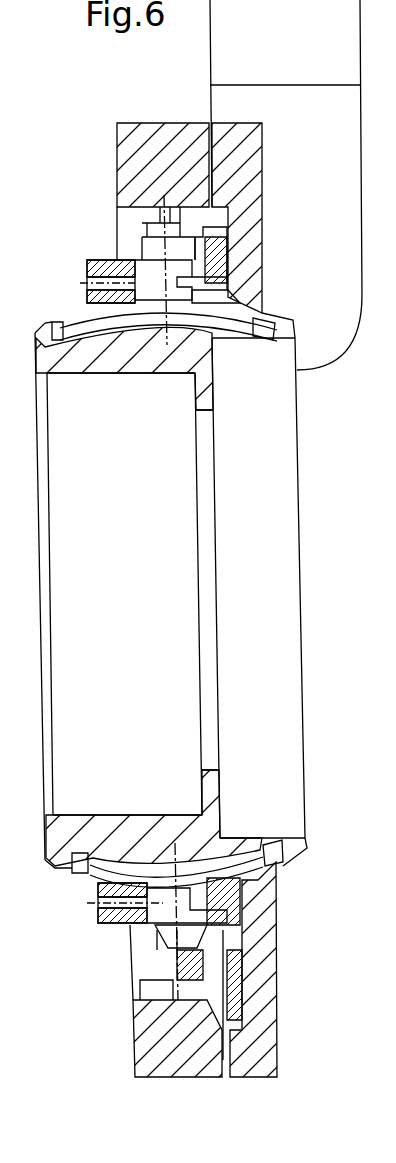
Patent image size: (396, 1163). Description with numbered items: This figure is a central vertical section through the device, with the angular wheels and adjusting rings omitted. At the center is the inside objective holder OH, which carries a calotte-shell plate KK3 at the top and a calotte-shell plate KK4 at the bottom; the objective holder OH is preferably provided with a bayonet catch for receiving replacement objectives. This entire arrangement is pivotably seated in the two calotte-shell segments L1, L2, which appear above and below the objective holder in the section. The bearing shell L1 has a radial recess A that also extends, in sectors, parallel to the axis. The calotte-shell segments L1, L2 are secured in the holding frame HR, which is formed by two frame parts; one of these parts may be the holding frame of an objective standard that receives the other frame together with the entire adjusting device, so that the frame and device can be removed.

The holding frame HR is at (157, 147).
The bearing shell L1 is at (232, 931).
The calotte-shell segment L2 is at (97, 966).
The calotte-shell plate KK3 is at (55, 321).
The calotte-shell plate KK4 is at (285, 862).
The objective holder OH is at (253, 410).
The radial recess A is at (253, 953).